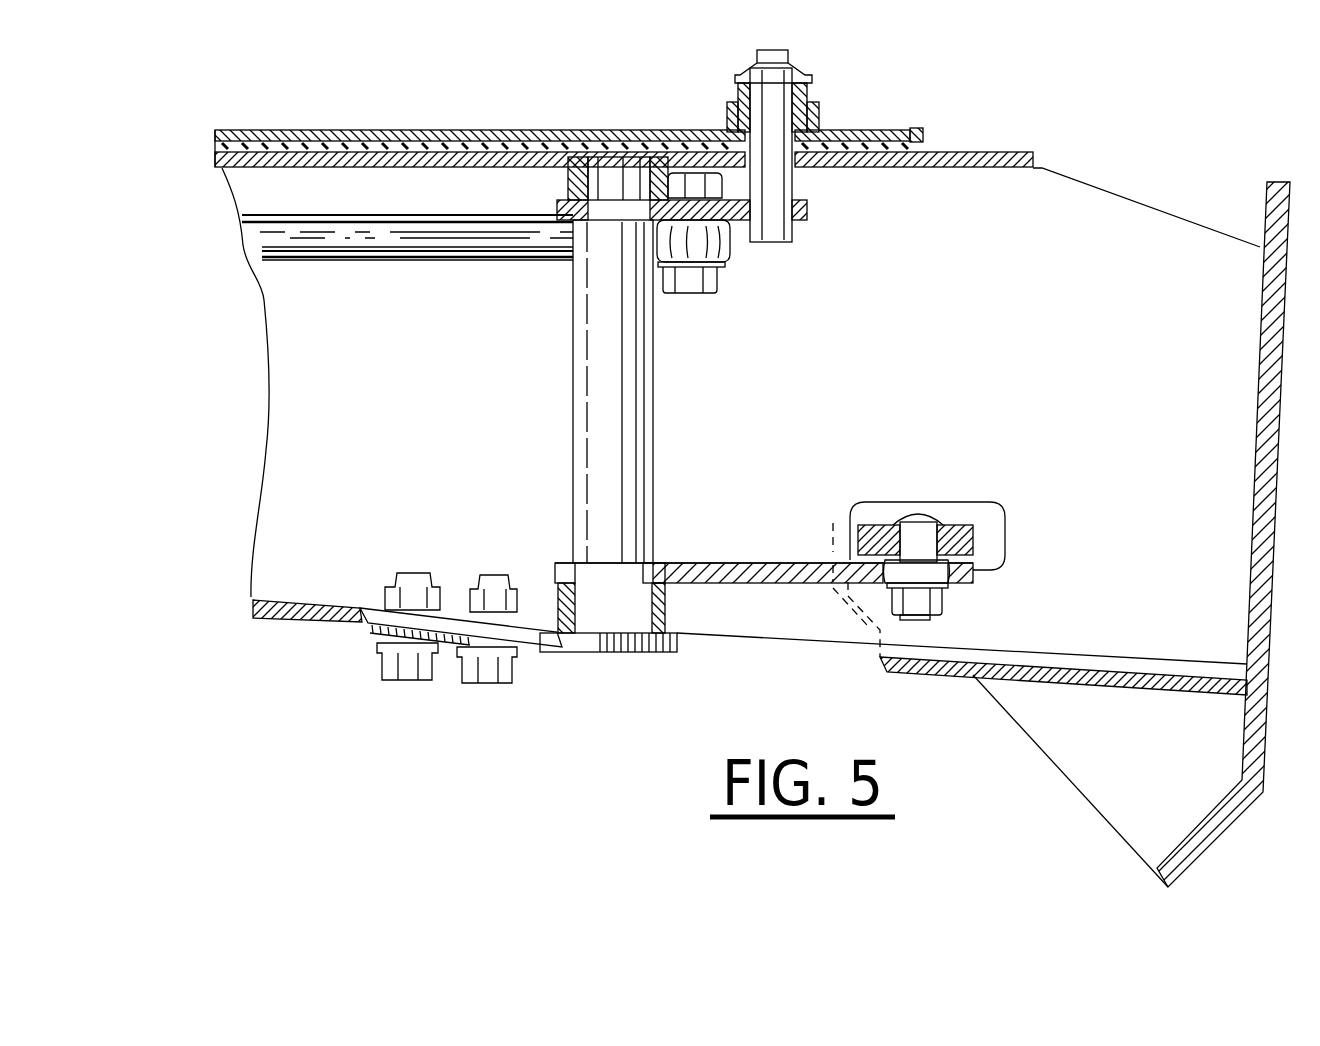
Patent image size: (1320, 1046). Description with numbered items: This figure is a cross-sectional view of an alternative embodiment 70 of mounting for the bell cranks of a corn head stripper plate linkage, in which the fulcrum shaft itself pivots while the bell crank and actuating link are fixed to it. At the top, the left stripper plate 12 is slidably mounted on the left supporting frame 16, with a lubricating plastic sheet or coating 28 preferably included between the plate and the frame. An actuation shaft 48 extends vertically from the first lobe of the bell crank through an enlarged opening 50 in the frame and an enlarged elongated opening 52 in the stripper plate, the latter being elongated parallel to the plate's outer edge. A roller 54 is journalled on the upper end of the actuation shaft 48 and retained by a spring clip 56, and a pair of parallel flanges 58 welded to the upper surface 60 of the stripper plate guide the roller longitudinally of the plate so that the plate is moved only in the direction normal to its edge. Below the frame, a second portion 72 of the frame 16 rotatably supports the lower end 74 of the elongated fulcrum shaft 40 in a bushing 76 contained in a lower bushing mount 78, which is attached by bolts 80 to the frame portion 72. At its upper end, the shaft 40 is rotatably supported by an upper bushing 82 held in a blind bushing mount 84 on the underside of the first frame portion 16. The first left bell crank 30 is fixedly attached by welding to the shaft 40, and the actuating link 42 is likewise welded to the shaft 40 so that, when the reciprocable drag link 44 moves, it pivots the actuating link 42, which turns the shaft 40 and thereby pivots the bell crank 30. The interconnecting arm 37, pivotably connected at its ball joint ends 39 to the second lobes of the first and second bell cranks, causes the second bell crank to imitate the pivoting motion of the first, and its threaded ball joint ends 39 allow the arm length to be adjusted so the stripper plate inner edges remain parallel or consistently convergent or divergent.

The left stripper plate 12 is at (320, 130).
The left supporting frame 16 is at (344, 168).
The lubricating plastic sheet or coating 28 is at (923, 150).
The first left bell crank 30 is at (808, 217).
The interconnecting arm 37 is at (402, 261).
The ball joint ends 39 is at (727, 250).
The fulcrum shaft 40 is at (655, 400).
The actuating link 42 is at (728, 563).
The drag link 44 is at (962, 524).
The actuation shaft 48 is at (775, 243).
The enlarged opening 50 is at (800, 165).
The enlarged elongated opening 52 is at (862, 130).
The roller 54 is at (824, 103).
The spring clip 56 is at (740, 73).
The parallel flanges 58 is at (727, 108).
The upper surface 60 is at (918, 130).
The alternative embodiment of mounting 70 is at (1157, 158).
The second portion of frame 72 is at (317, 612).
The lower end of fulcrum shaft 74 is at (630, 652).
The bushing 76 is at (668, 625).
The lower bushing mount 78 is at (560, 650).
The bolts 80 is at (480, 684).
The upper bushing 82 is at (575, 218).
The blind bushing mount 84 is at (566, 184).